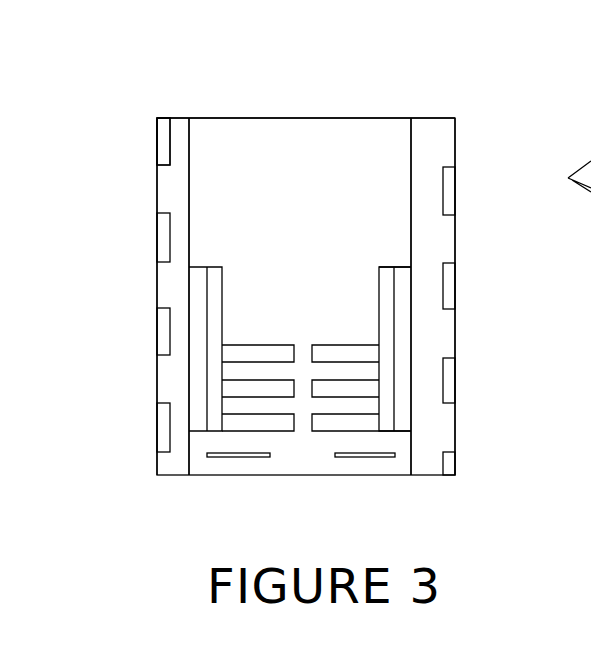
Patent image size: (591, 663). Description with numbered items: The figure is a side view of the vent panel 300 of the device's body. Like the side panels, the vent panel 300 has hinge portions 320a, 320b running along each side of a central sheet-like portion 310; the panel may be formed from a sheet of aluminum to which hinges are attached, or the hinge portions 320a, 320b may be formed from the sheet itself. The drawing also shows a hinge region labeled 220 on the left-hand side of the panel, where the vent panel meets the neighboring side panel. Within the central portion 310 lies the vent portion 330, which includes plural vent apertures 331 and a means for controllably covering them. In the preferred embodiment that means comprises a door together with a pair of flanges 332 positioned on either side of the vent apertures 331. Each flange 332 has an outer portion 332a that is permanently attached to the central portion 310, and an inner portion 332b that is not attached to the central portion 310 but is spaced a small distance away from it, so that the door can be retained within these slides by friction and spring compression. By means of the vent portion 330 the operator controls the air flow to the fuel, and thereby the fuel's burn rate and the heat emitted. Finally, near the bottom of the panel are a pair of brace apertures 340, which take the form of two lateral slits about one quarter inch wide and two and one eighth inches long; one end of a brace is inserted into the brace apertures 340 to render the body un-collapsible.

The engagement notch 220 is at (157, 133).
The vent panel 300 is at (148, 293).
The central sheet-like portion 310 is at (275, 133).
The hinge portion 320a is at (157, 192).
The hinge portion 320b is at (456, 133).
The vent portion 330 is at (358, 152).
The vent apertures 331 is at (243, 343).
The flanges 332 is at (216, 267).
The outer portion 332a is at (397, 267).
The inner portion 332b is at (379, 308).
The brace apertures 340 is at (248, 457).